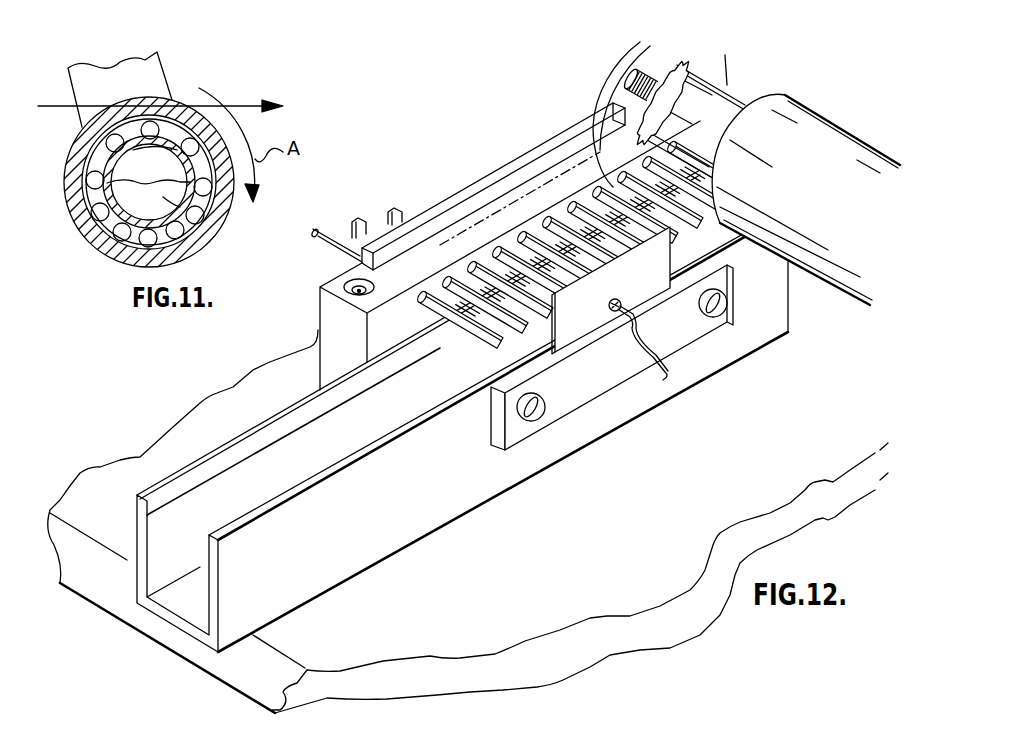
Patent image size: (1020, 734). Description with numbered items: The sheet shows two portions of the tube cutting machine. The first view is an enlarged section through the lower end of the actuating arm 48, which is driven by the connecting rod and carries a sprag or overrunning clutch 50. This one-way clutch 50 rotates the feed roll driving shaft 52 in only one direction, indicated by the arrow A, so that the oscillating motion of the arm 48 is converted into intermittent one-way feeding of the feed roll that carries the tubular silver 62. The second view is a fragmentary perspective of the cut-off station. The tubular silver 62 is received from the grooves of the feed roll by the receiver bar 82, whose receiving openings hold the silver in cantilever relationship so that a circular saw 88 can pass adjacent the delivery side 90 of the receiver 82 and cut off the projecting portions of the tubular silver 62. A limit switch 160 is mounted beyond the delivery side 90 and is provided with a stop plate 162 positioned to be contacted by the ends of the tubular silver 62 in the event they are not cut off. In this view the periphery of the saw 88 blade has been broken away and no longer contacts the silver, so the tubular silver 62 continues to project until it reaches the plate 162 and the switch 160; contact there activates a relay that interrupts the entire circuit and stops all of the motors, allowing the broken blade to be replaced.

In FIG. 11, the actuating arm 48 is at (153, 83).
In FIG. 11, the sprag or overrunning clutch 50 is at (82, 230).
In FIG. 11, the feed roll driving shaft 52 is at (140, 212).
In FIG. 12, the tubular silver 62 is at (557, 292).
In FIG. 12, the receiver bar 82 is at (448, 240).
In FIG. 12, the circular saw 88 is at (690, 63).
In FIG. 12, the delivery side 90 is at (400, 305).
In FIG. 12, the limit switch 160 is at (592, 312).
In FIG. 12, the stop plate 162 is at (647, 271).